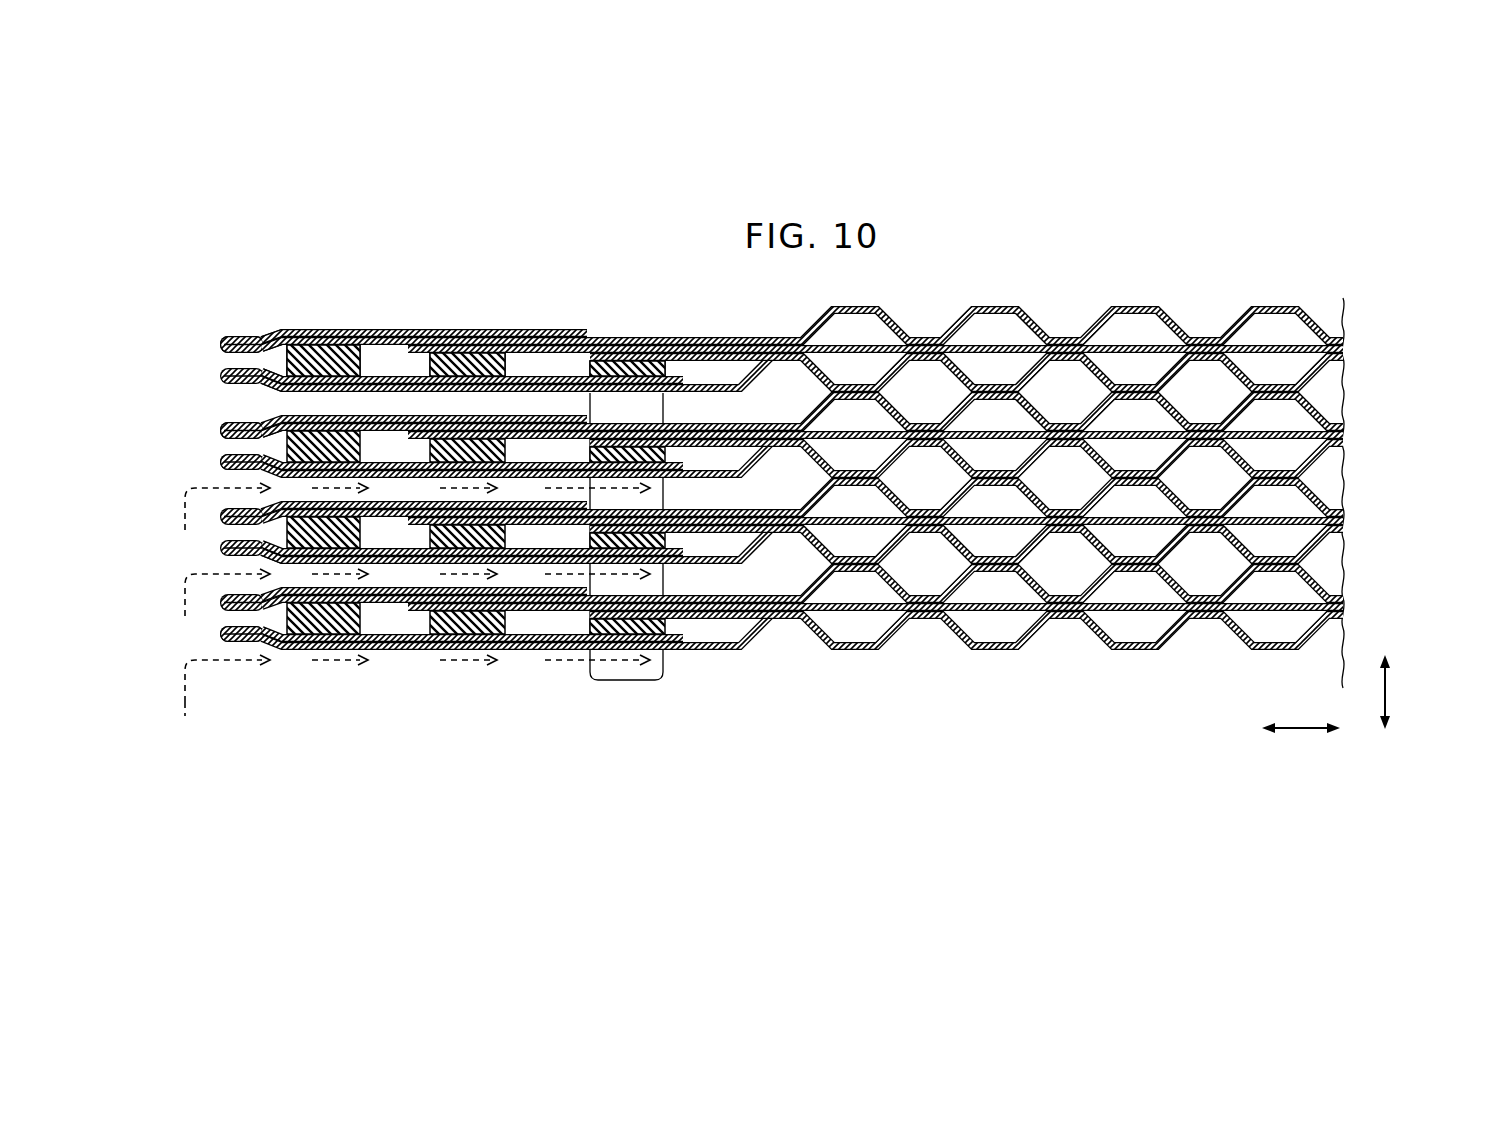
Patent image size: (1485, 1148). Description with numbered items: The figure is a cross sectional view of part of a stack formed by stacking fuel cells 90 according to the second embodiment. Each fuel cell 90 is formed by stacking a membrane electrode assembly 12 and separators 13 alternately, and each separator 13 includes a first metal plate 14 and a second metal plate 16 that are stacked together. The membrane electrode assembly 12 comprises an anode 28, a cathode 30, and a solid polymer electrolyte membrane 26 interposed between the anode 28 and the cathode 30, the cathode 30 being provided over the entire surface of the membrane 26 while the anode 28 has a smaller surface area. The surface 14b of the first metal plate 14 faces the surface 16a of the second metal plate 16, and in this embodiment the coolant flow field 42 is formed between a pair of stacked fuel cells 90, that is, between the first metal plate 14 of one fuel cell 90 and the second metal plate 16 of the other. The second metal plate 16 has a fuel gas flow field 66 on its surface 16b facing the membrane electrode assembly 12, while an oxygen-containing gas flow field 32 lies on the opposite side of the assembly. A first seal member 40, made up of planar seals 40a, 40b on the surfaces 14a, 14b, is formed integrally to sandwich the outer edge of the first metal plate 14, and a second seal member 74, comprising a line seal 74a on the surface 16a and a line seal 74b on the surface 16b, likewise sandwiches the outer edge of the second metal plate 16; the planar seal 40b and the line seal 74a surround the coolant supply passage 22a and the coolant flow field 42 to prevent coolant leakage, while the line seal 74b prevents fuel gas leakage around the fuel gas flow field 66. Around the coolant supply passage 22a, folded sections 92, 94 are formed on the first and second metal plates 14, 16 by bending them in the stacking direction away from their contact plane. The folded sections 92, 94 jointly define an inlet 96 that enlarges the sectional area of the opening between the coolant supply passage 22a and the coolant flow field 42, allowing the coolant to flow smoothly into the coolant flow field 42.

The fuel cell 90 is at (1079, 261).
The membrane electrode assembly 12 is at (1422, 306).
The separator 13 is at (1404, 476).
The first metal plate 14 is at (1325, 495).
The surface of the first metal plate 14a is at (742, 636).
The surface of the first metal plate 14b is at (768, 598).
The second metal plate 16 is at (1322, 554).
The surface of the second metal plate 16a is at (700, 470).
The surface of the second metal plate 16b is at (697, 448).
The coolant supply passage 22a is at (389, 713).
The solid polymer electrolyte membrane 26 is at (1346, 349).
The anode 28 is at (1346, 357).
The cathode 30 is at (1346, 341).
The oxygen-containing gas flow field 32 is at (1272, 332).
The first seal member 40 is at (165, 321).
The planar seal 40a is at (248, 355).
The planar seal 40b is at (247, 337).
The coolant flow field 42 is at (1203, 640).
The fuel gas flow field 66 is at (1278, 376).
The second seal member 74 is at (207, 638).
The line seal 74a is at (618, 680).
The line seal 74b is at (556, 662).
The folded section 92 is at (225, 462).
The folded section 94 is at (232, 428).
The inlet 96 is at (222, 476).